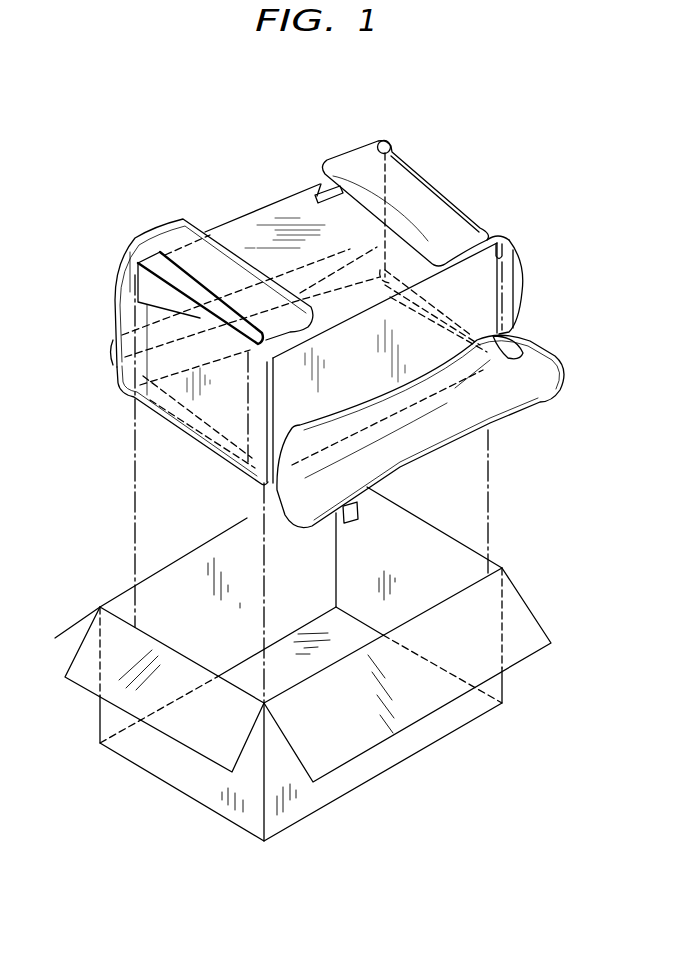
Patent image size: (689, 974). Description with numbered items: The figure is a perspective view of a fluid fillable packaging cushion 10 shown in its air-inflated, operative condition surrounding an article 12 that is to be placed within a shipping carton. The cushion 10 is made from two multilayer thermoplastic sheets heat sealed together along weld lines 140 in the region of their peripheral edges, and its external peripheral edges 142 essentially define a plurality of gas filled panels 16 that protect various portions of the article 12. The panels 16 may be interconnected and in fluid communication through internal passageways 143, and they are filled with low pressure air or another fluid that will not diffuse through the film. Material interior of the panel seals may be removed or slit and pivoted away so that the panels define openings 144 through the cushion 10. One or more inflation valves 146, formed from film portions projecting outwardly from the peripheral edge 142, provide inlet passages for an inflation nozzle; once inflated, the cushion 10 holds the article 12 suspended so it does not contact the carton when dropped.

The fluid fillable packaging cushion 10 is at (100, 258).
The article 12 is at (254, 191).
The fluid or gas filled panels 16 is at (398, 172).
The weld lines 140 is at (562, 356).
The external peripheral edges 142 is at (331, 162).
The internal passageways 143 is at (506, 236).
The openings 144 is at (458, 210).
The inflation valves 146 is at (316, 190).